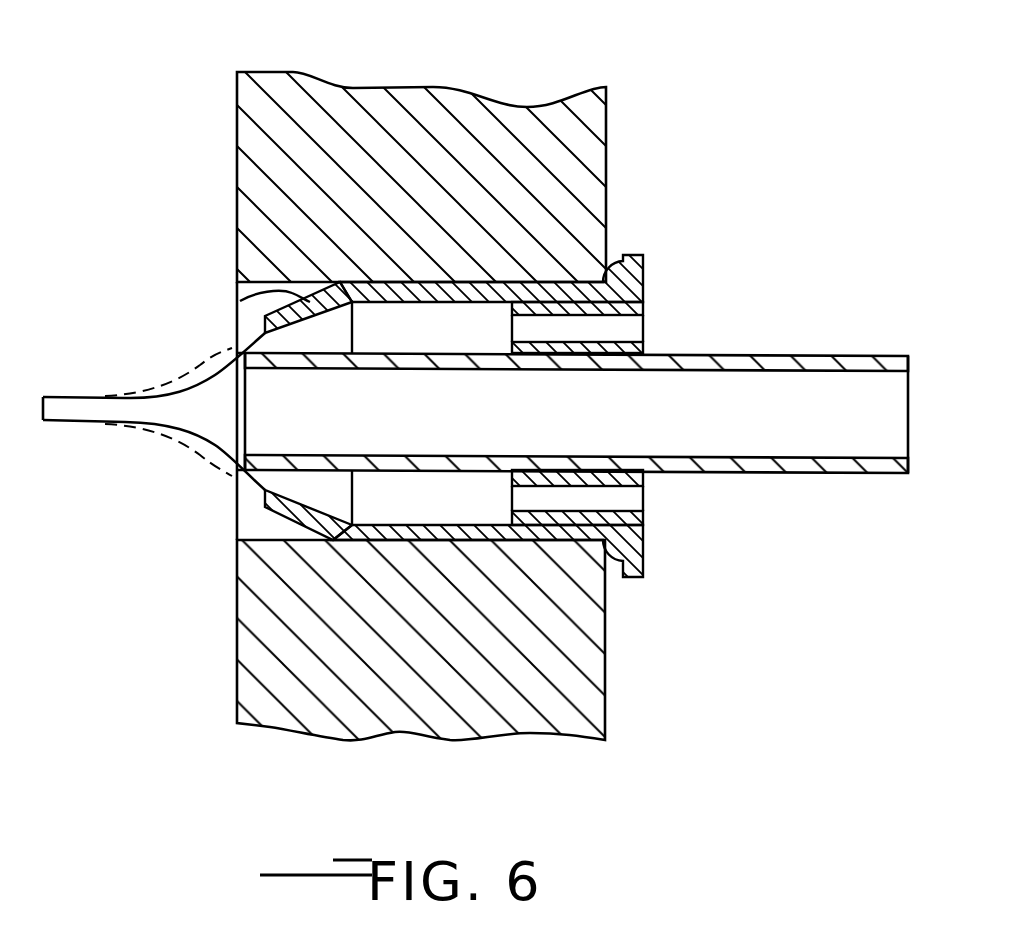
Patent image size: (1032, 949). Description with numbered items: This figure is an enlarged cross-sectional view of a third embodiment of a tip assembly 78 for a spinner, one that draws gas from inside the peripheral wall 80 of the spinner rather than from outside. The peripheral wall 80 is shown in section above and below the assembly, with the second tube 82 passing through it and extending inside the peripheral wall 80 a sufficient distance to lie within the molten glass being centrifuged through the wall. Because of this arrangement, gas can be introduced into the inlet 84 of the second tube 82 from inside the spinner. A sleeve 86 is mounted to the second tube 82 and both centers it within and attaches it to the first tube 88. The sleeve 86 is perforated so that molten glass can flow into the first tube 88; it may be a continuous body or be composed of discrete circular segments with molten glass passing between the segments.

The tip assembly 78 is at (196, 242).
The peripheral wall 80 is at (483, 122).
The second tube 82 is at (793, 363).
The inlet 84 is at (909, 424).
The sleeve 86 is at (633, 327).
The first tube 88 is at (238, 301).